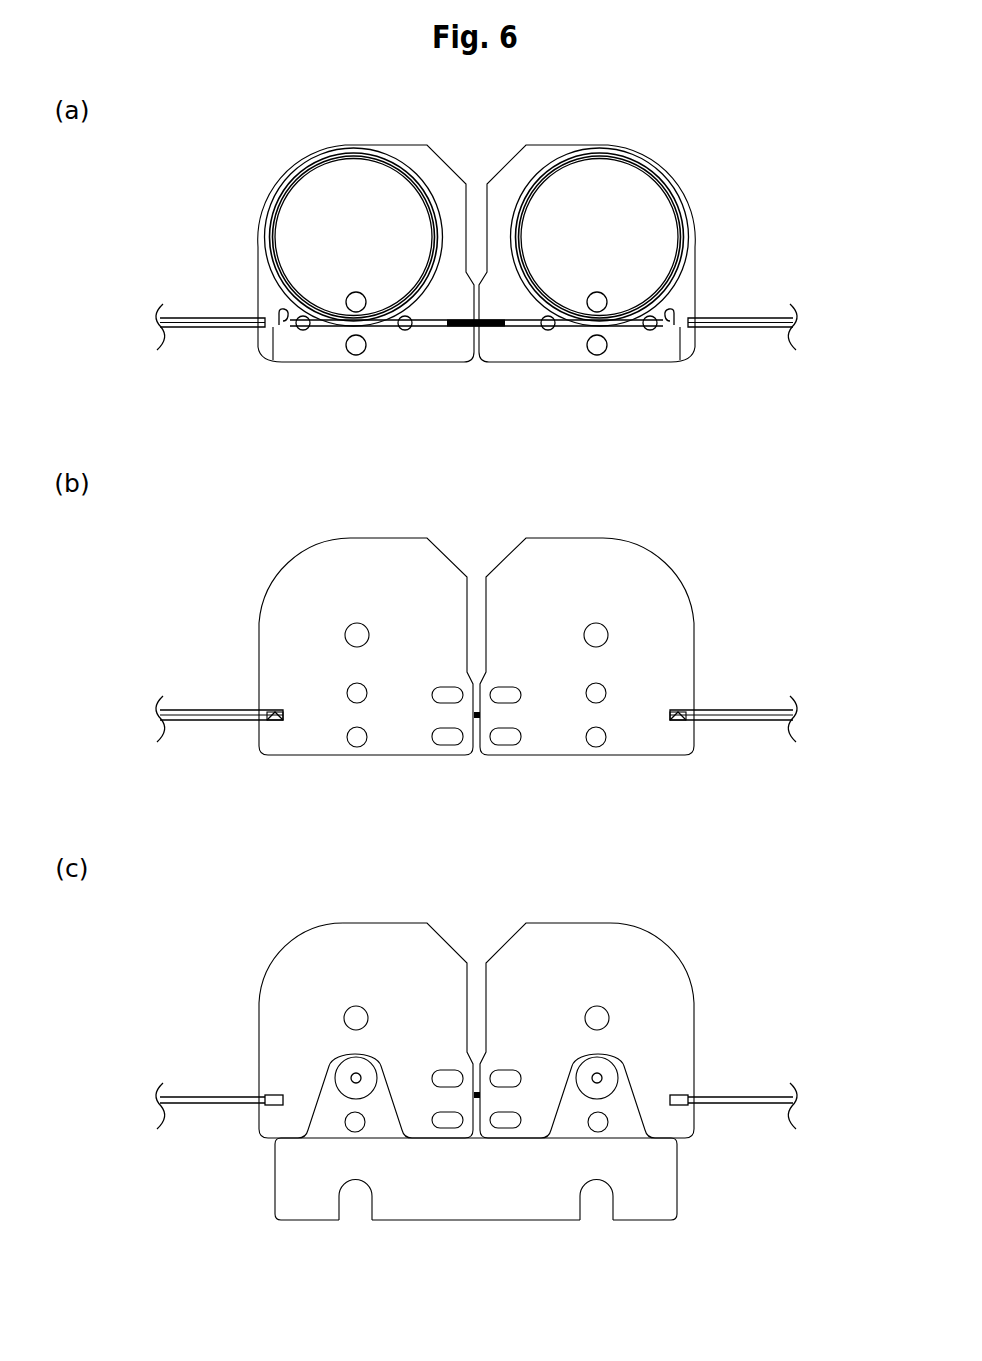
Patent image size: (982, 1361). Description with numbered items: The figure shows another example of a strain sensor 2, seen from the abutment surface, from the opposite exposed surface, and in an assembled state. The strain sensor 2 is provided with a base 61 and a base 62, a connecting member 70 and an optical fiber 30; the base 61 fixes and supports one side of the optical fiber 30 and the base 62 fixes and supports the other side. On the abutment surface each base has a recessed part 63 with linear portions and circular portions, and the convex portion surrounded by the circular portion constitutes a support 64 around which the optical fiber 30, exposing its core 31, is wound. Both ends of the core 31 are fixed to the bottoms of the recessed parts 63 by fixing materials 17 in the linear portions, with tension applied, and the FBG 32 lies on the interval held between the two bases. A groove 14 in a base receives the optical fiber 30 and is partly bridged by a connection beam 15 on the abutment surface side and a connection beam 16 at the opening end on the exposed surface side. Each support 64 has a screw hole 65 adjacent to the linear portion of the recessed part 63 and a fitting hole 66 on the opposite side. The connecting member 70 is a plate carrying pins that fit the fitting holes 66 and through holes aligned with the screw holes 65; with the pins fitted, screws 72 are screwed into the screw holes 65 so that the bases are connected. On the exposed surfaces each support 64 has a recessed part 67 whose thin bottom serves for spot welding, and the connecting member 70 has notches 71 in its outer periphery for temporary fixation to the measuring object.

The strain sensor 2 is at (224, 933).
The groove 14 is at (270, 722).
The connection beam 15 is at (281, 316).
The connection beam 16 is at (262, 710).
The fixing material 17 is at (302, 332).
The optical fiber 30 is at (183, 318).
The core 31 is at (437, 330).
The FBG 32 is at (485, 332).
The base 61 is at (393, 143).
The base 62 is at (545, 143).
The recessed part 63 is at (277, 326).
The support 64 is at (318, 193).
The screw hole 65 is at (352, 291).
The fitting hole 66 is at (355, 356).
The recessed part for spot welding 67 is at (353, 624).
The connecting member 70 is at (275, 1195).
The notch 71 is at (340, 1203).
The screw 72 is at (354, 1066).